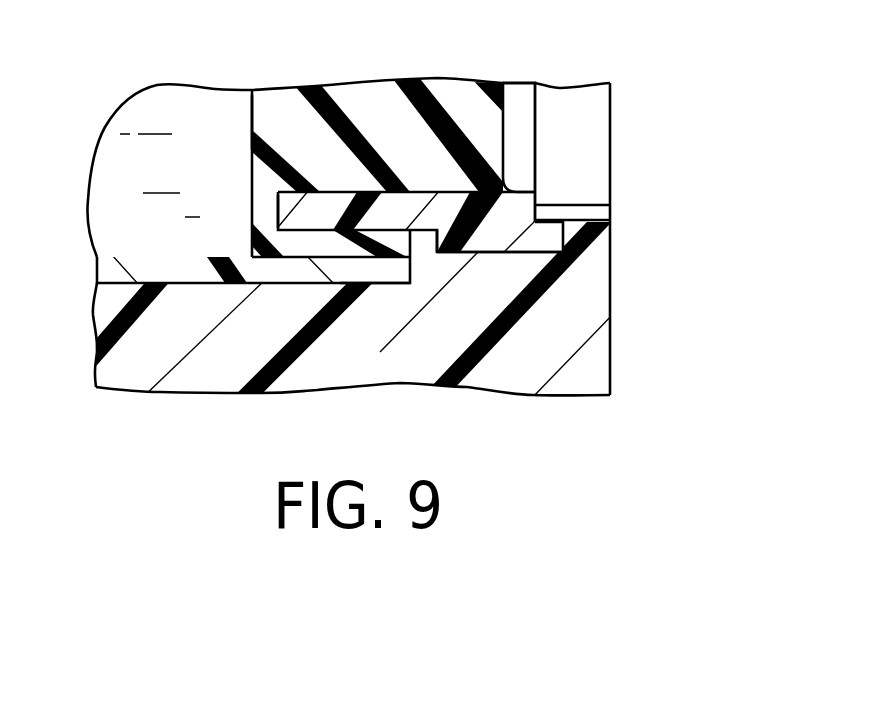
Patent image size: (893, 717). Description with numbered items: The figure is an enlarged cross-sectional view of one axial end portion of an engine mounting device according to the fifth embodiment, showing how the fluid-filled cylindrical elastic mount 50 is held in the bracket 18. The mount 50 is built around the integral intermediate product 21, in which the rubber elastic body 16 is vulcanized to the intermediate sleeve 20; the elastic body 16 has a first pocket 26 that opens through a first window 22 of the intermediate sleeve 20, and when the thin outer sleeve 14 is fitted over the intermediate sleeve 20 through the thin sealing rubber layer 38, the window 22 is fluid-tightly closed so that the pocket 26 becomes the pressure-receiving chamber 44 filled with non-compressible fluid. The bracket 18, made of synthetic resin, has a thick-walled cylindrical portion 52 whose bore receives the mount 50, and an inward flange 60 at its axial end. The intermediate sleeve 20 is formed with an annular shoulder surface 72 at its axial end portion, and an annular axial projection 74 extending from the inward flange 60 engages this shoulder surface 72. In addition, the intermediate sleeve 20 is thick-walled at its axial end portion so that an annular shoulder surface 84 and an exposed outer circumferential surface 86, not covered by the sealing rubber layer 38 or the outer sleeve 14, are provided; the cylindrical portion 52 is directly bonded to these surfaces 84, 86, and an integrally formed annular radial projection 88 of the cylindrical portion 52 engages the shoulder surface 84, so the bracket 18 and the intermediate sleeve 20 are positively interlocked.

The outer sleeve 14 is at (201, 272).
The elastic body 16 is at (465, 95).
The bracket 18 is at (643, 352).
The intermediate sleeve 20 is at (327, 207).
The integral intermediate product 21 is at (532, 128).
The first window 22 is at (277, 210).
The first pocket 26 is at (252, 117).
The sealing rubber layer 38 is at (305, 242).
The pressure-receiving chamber 44 is at (115, 157).
The fluid-filled cylindrical elastic mount 50 is at (372, 303).
The cylindrical portion 52 is at (145, 340).
The inward flange 60 is at (577, 237).
The shoulder surface 72 is at (555, 217).
The annular axial projection 74 is at (547, 207).
The annular shoulder surface 84 is at (435, 247).
The outer circumferential surface 86 is at (490, 253).
The annular radial projection 88 is at (423, 240).